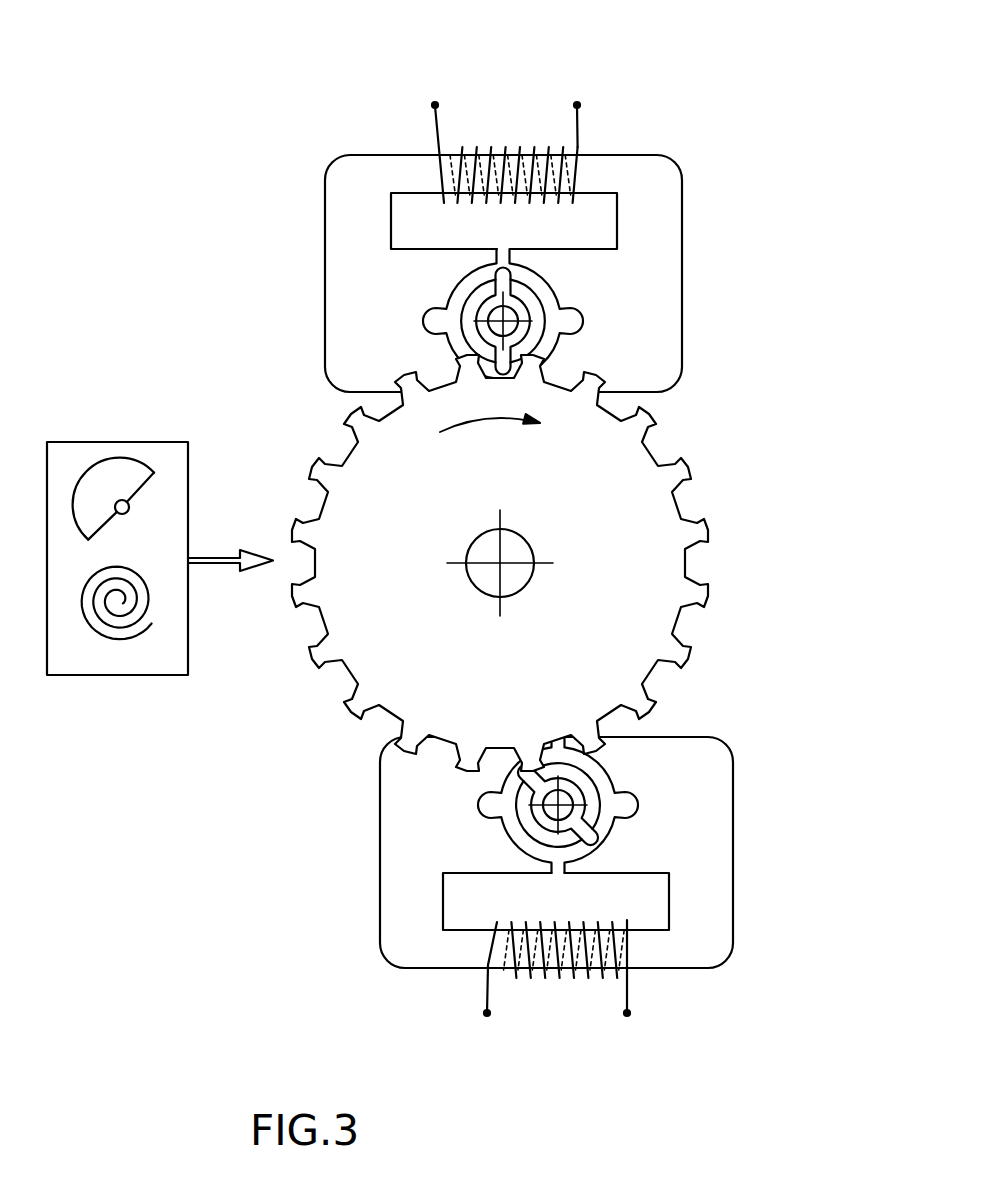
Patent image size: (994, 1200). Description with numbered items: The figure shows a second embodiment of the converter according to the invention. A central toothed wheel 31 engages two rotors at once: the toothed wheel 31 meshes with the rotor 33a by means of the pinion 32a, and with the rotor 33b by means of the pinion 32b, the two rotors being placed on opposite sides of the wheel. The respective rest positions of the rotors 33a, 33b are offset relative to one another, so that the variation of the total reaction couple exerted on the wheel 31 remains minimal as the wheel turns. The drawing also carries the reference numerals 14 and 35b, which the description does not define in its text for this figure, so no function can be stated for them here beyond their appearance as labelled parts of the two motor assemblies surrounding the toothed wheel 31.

The coil of first stepping motor 14 is at (576, 125).
The toothed wheel 31 is at (665, 612).
The pinion 32a is at (518, 335).
The pinion 32b is at (577, 793).
The rotor 33a is at (525, 293).
The rotor 33b is at (592, 815).
The coil of second stepping motor 35b is at (627, 990).